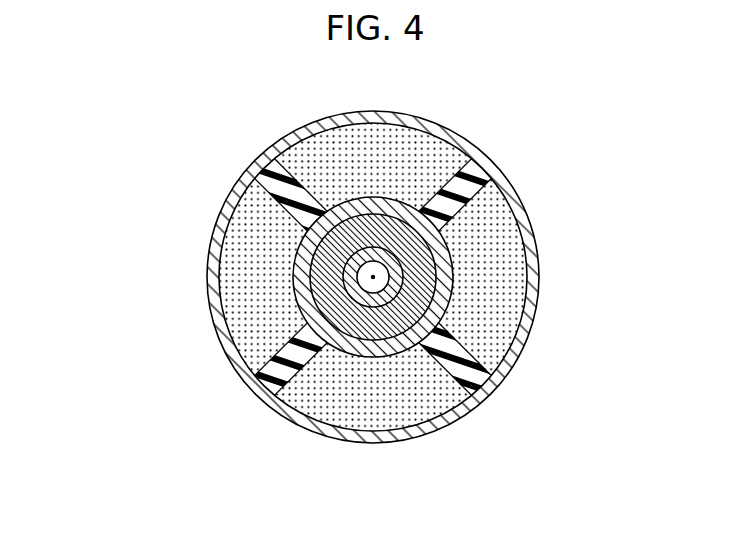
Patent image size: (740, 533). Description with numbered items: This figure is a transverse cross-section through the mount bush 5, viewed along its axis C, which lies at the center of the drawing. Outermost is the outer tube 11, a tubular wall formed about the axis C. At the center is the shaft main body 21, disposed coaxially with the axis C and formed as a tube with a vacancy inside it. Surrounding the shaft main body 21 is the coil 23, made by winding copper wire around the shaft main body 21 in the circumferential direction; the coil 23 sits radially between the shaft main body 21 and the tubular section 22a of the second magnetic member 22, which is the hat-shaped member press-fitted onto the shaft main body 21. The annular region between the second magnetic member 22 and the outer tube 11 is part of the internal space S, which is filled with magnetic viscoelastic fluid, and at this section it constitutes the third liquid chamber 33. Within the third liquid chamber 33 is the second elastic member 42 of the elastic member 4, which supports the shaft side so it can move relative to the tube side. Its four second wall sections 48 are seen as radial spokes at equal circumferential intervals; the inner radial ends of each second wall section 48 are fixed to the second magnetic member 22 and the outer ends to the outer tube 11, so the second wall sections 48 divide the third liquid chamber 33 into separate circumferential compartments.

The mount bush 5 is at (517, 156).
The outer tube 11 is at (266, 160).
The tubular section 22a is at (384, 205).
The second magnetic member 22 is at (391, 209).
The coil 23 is at (320, 267).
The shaft main body 21 is at (350, 290).
The third liquid chamber 33 is at (500, 243).
The internal space S is at (412, 402).
The second elastic member 42 is at (273, 342).
The elastic member 4 is at (315, 279).
The second wall section 48 is at (477, 375).
The axis C is at (380, 277).